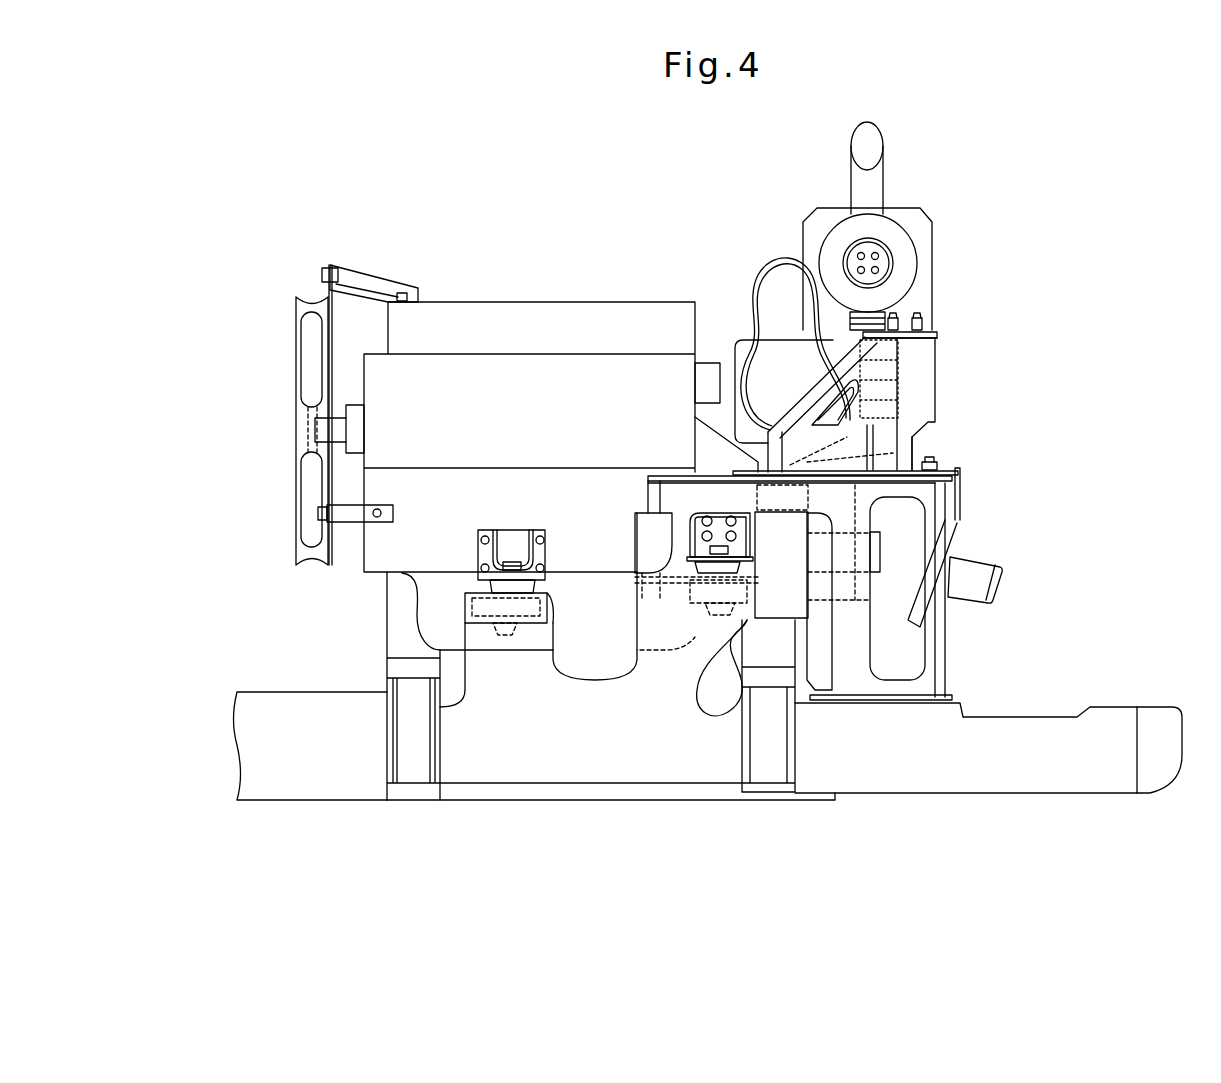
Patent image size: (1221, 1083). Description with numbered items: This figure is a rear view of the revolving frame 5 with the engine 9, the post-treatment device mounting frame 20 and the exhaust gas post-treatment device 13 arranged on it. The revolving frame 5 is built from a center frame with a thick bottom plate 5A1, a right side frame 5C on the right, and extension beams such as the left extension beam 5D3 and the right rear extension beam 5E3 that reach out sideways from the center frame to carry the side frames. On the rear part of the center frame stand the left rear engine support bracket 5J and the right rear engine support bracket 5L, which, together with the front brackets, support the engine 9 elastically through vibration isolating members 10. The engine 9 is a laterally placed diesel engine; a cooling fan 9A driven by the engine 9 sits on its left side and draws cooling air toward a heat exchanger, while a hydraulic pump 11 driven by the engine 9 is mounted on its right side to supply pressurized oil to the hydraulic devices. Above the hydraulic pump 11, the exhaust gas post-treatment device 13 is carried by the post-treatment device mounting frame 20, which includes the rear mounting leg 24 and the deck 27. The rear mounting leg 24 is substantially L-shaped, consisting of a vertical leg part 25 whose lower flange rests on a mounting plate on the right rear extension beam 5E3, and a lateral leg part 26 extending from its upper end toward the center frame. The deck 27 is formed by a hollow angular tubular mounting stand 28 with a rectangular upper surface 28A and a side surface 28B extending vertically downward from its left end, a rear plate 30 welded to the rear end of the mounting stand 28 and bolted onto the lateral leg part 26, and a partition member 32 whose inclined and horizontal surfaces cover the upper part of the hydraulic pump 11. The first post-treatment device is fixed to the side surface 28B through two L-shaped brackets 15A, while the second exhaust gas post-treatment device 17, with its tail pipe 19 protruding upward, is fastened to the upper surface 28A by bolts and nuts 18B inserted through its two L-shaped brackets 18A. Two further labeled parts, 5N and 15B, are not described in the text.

The revolving frame 5 is at (708, 737).
The bottom plate 5A1 is at (548, 790).
The right side frame 5C is at (1160, 728).
The left extension beam 5D3 is at (320, 765).
The right rear extension beam 5E3 is at (1043, 762).
The left rear engine support bracket 5J is at (477, 610).
The right rear engine support bracket 5L is at (657, 575).
The clamp 5N is at (637, 548).
The engine 9 is at (518, 382).
The cooling fan 9A is at (306, 345).
The vibration isolating member 10 is at (497, 586).
The hydraulic pump 11 is at (910, 553).
The exhaust gas post-treatment device 13 is at (906, 212).
The bracket 15A is at (735, 348).
The bracket portion 15B is at (877, 353).
The second exhaust gas post-treatment device 17 is at (897, 235).
The bracket 18A is at (923, 263).
The bolt and nut 18B is at (919, 318).
The tail pipe 19 is at (873, 182).
The post-treatment device mounting frame 20 is at (984, 495).
The rear mounting leg 24 is at (948, 648).
The vertical leg part 25 is at (853, 650).
The lateral leg part 26 is at (687, 495).
The deck 27 is at (938, 338).
The mounting stand 28 is at (927, 400).
The upper surface 28A is at (927, 331).
The side surface 28B is at (878, 383).
The rear plate 30 is at (917, 388).
The partition member 32 is at (940, 463).